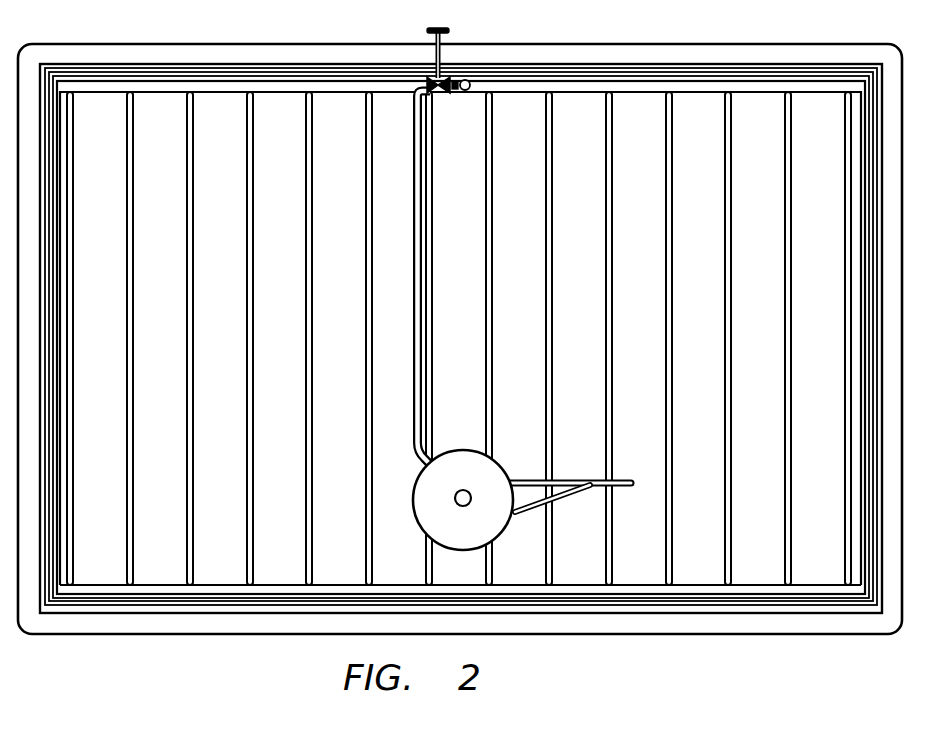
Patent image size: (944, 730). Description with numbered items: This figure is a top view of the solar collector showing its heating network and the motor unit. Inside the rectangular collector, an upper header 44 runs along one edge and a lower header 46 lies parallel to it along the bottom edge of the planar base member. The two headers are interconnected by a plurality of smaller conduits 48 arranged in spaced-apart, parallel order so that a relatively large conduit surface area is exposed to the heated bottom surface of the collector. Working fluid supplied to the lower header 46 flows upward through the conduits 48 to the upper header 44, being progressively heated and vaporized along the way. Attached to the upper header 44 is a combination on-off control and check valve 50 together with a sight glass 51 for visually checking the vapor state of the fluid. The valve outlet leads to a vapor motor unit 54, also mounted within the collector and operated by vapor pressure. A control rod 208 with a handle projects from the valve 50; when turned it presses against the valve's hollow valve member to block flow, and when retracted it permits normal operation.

The control rod 208 is at (443, 50).
The upper header 44 is at (703, 93).
The lower header 46 is at (628, 584).
The conduits 48 is at (367, 385).
The combination on-off control and check valve 50 is at (439, 96).
The sight glass 51 is at (467, 93).
The vapor motor unit 54 is at (499, 462).